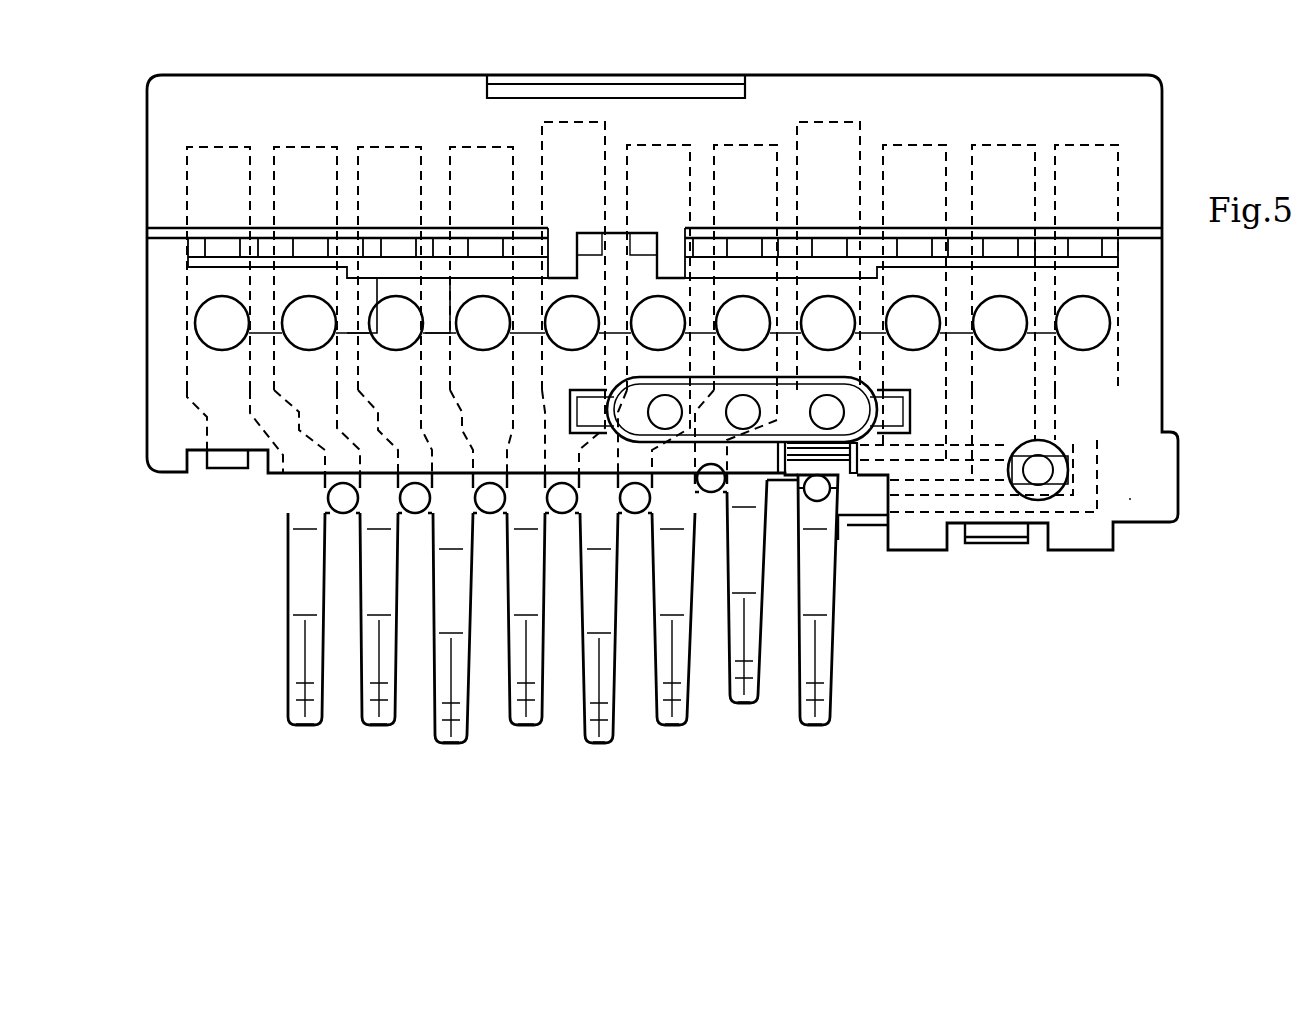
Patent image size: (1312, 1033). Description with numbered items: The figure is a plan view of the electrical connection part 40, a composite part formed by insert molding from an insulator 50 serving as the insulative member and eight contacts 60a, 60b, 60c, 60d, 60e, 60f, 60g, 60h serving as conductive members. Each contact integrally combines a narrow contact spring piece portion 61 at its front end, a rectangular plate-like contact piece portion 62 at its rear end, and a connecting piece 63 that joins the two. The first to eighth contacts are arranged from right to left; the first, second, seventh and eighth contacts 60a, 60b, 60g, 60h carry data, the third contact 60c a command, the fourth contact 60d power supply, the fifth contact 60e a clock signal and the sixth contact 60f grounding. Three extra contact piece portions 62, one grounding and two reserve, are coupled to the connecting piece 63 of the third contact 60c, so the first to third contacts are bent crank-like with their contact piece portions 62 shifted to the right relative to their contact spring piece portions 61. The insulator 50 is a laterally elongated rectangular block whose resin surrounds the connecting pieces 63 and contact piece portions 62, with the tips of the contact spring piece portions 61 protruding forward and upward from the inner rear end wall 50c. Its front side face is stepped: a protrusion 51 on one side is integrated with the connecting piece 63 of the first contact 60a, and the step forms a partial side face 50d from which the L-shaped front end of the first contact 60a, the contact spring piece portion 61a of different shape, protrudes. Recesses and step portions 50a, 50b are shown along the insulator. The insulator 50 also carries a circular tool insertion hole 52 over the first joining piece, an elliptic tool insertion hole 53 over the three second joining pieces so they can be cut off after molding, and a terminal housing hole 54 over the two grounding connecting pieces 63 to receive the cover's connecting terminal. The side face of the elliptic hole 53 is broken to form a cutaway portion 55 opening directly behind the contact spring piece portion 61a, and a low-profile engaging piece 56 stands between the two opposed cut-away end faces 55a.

The electrical connection part 40 is at (692, 312).
The insulator 50 is at (1163, 97).
The housing step portion 50a is at (950, 552).
The housing step portion 50b is at (184, 472).
The inner rear end wall 50c is at (492, 515).
The partial side face 50d is at (890, 525).
The protrusion 51 is at (1130, 498).
The circular tool insertion hole 52 is at (1062, 447).
The elliptic tool insertion hole 53 is at (800, 385).
The terminal housing hole 54 is at (624, 278).
The cutaway portion 55 is at (795, 475).
The cut-away end faces 55a is at (782, 442).
The engaging piece 56 is at (810, 462).
The first contact 60a is at (862, 663).
The second contact 60b is at (757, 731).
The third contact 60c is at (683, 751).
The fourth contact 60d is at (605, 762).
The fifth contact 60e is at (527, 751).
The sixth contact 60f is at (450, 762).
The seventh contact 60g is at (375, 752).
The eighth contact 60h is at (271, 661).
The contact spring piece portion 61 is at (752, 685).
The contact spring piece portion of different shape 61a is at (828, 720).
The contact piece portion 62 is at (1076, 147).
The connecting piece 63 is at (862, 470).